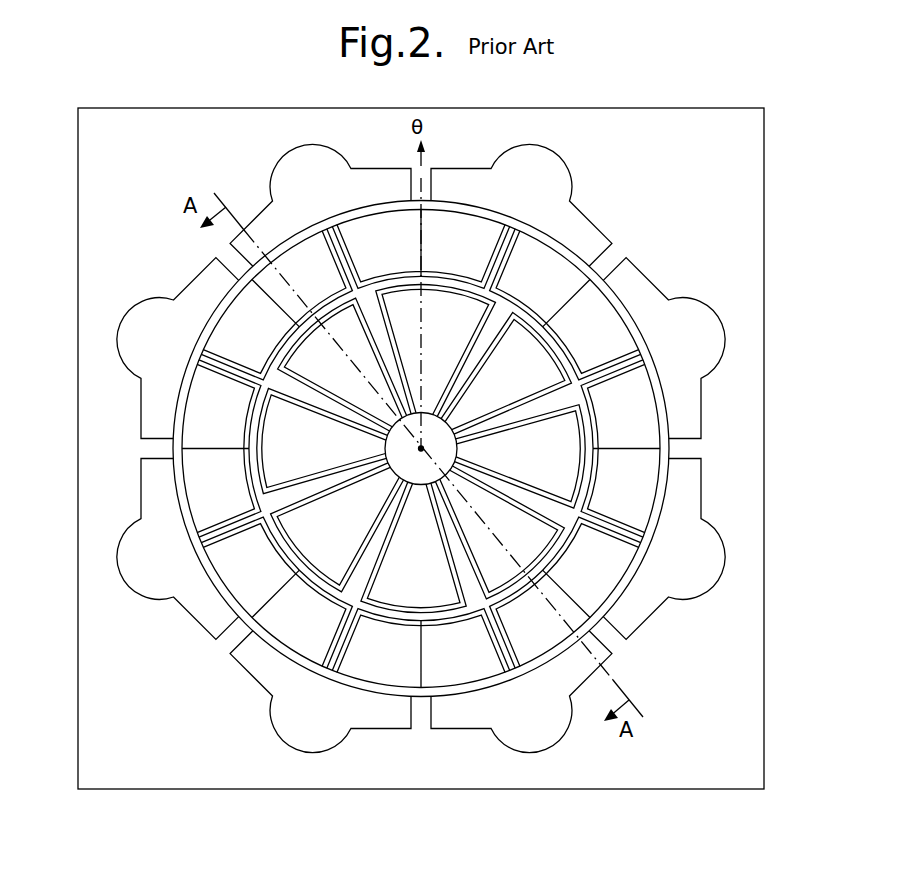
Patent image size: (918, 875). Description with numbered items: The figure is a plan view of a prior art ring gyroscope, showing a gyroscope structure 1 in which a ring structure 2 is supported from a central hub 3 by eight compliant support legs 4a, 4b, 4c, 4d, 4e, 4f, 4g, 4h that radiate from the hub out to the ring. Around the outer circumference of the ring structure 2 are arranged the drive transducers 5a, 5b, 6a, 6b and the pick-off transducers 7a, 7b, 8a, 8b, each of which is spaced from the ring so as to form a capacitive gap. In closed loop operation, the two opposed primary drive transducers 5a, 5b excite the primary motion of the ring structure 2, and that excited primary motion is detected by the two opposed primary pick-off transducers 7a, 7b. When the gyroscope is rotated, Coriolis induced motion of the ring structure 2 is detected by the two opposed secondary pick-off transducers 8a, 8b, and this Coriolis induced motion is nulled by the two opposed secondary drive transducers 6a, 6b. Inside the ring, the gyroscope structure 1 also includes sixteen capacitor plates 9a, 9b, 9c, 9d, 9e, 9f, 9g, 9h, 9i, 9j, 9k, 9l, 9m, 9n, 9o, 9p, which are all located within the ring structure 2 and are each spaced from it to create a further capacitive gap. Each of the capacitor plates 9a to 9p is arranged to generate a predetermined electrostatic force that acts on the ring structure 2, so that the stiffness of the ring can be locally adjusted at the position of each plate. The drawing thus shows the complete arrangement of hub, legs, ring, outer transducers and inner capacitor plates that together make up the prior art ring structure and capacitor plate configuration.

The gyroscope structure 1 is at (650, 227).
The ring structure 2 is at (218, 256).
The central hub 3 is at (452, 428).
The compliant support leg 4a is at (396, 354).
The compliant support leg 4b is at (482, 350).
The compliant support leg 4c is at (531, 426).
The compliant support leg 4d is at (480, 472).
The compliant support leg 4e is at (445, 563).
The compliant support leg 4f is at (363, 534).
The compliant support leg 4g is at (338, 458).
The compliant support leg 4h is at (342, 396).
The primary drive transducer 5a is at (298, 147).
The primary drive transducer 5b is at (545, 755).
The secondary drive transducer 6a is at (535, 146).
The secondary drive transducer 6b is at (300, 760).
The primary pick-off transducer 7a is at (728, 322).
The primary pick-off transducer 7b is at (127, 562).
The secondary pick-off transducer 8a is at (726, 574).
The secondary pick-off transducer 8b is at (128, 370).
The capacitor plate 9a is at (394, 257).
The capacitor plate 9b is at (476, 257).
The capacitor plate 9c is at (551, 289).
The capacitor plate 9d is at (608, 346).
The capacitor plate 9e is at (639, 421).
The capacitor plate 9f is at (638, 502).
The capacitor plate 9g is at (608, 577).
The capacitor plate 9h is at (551, 634).
The capacitor plate 9i is at (472, 666).
The capacitor plate 9j is at (392, 666).
The capacitor plate 9k is at (320, 634).
The capacitor plate 9l is at (260, 577).
The capacitor plate 9m is at (235, 502).
The capacitor plate 9n is at (231, 421).
The capacitor plate 9o is at (262, 346).
The capacitor plate 9p is at (319, 289).